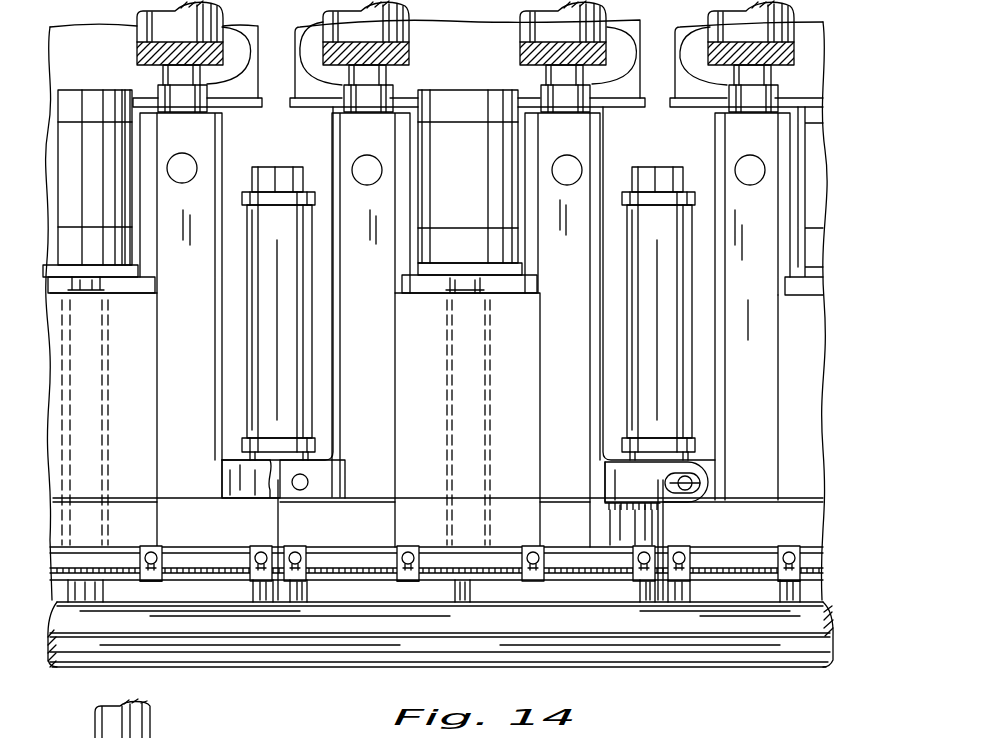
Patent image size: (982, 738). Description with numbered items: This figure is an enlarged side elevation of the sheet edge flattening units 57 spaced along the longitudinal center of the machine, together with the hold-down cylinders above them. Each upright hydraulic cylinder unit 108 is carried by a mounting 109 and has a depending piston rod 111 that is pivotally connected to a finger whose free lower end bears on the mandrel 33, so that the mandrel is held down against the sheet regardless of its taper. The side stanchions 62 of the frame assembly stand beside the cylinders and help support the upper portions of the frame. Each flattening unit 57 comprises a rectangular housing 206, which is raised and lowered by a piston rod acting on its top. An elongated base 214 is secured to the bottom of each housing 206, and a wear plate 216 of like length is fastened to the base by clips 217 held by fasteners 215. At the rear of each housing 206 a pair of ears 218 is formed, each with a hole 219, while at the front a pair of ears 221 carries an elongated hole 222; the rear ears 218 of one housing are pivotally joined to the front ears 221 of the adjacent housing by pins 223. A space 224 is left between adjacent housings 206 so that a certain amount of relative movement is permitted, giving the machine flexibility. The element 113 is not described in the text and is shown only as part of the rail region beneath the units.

The mandrel 33 is at (620, 657).
The sheet edge flattening unit 57 is at (151, 589).
The side stanchion 62 is at (258, 275).
The hydraulic cylinder unit 108 is at (97, 107).
The mounting 109 is at (142, 285).
The piston rod 111 is at (90, 283).
The spacer 113 is at (68, 587).
The housing 206 is at (233, 146).
The base 214 is at (358, 557).
The fastener 215 is at (150, 552).
The wear plate 216 is at (365, 577).
The clip 217 is at (162, 578).
The rear ear 218 is at (337, 463).
The hole 219 is at (309, 482).
The front ear 221 is at (240, 485).
The elongated hole 222 is at (665, 485).
The pin 223 is at (700, 480).
The space 224 is at (280, 543).